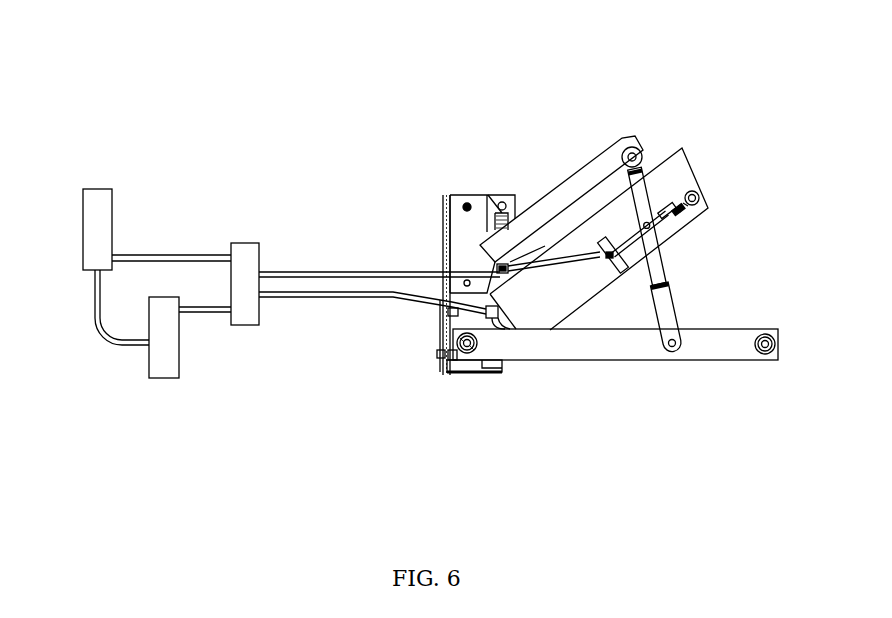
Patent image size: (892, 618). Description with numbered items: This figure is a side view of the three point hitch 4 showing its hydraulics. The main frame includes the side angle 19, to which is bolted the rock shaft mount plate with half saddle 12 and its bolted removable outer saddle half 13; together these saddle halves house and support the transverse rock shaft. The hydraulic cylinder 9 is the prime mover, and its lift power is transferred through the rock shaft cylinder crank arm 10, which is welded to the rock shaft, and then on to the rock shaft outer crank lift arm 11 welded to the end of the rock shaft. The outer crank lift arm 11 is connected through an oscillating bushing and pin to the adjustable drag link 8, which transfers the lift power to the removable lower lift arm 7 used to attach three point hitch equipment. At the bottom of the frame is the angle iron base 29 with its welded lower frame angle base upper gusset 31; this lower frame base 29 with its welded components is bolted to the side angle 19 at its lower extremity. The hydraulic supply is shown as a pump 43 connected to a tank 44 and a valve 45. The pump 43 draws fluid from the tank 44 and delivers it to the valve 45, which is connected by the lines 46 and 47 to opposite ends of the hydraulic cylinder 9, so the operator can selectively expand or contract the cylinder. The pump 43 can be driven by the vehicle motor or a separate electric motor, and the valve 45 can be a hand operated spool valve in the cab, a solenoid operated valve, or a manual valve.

The actuating mechanism 4 is at (474, 118).
The lower lift arm 7 is at (605, 360).
The drag link 8 is at (678, 308).
The hydraulic cylinder 9 is at (668, 227).
The rock shaft cylinder crank arm 10 is at (695, 163).
The rock shaft outer crank lift arm 11 is at (640, 137).
The rock shaft mount plate with half saddle 12 is at (472, 190).
The removable outer saddle half 13 is at (513, 208).
The side angle 19 is at (443, 218).
The angle iron base 29 is at (443, 377).
The lower frame angle base upper gusset 31 is at (440, 322).
The pump 43 is at (98, 200).
The tank 44 is at (162, 367).
The valve 45 is at (245, 250).
The hydraulic line 46 is at (393, 275).
The hydraulic line 47 is at (368, 300).